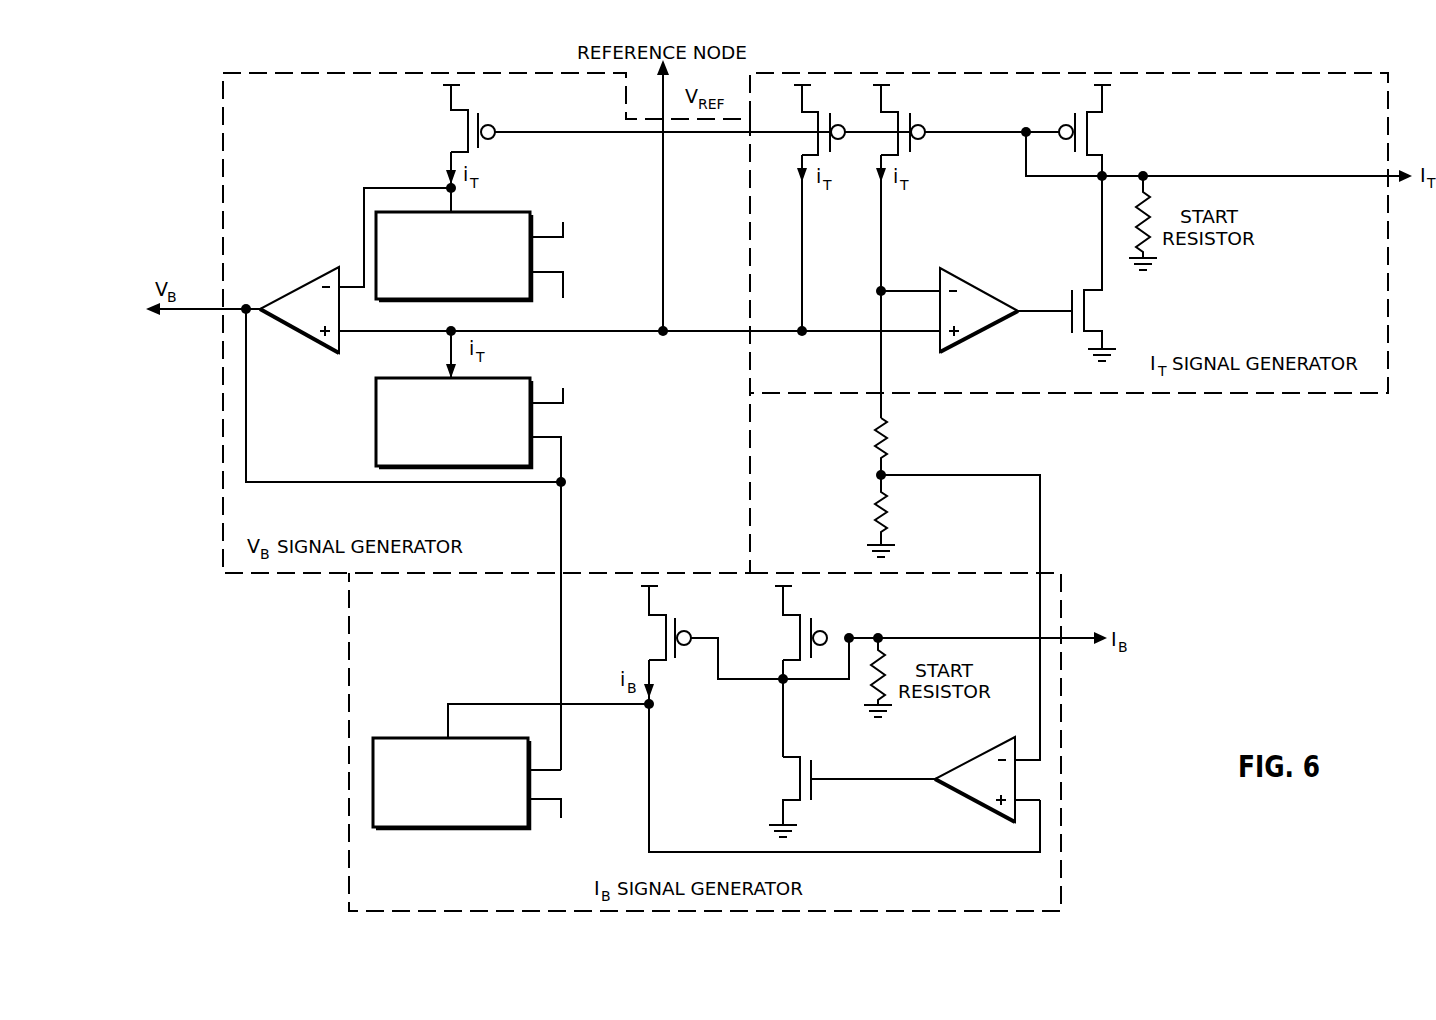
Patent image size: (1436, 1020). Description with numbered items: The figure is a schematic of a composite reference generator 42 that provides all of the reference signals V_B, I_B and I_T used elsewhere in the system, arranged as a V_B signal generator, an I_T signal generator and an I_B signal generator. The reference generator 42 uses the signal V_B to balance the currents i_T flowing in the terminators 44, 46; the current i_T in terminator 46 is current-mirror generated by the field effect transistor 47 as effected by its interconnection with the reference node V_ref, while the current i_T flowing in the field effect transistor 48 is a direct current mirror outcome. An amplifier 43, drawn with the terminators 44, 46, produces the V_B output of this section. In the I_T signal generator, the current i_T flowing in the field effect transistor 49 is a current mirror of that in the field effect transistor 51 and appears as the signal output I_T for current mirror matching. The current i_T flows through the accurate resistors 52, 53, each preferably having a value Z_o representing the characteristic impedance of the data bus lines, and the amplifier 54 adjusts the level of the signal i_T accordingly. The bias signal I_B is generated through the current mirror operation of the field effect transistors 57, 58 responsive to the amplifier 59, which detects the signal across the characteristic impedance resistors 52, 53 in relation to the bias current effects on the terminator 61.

The reference generator 42 is at (1228, 529).
The operational amplifier 43 is at (293, 290).
The terminator 44 is at (503, 280).
The terminator 46 is at (503, 446).
The field effect transistor 47 is at (805, 140).
The field effect transistor 48 is at (457, 132).
The field effect transistor 49 is at (918, 116).
The field effect transistor 51 is at (1103, 138).
The resistor 52 is at (873, 438).
The resistor 53 is at (873, 513).
The amplifier 54 is at (977, 285).
The field effect transistor 57 is at (650, 637).
The field effect transistor 58 is at (783, 640).
The amplifier 59 is at (958, 797).
The terminator 61 is at (499, 807).